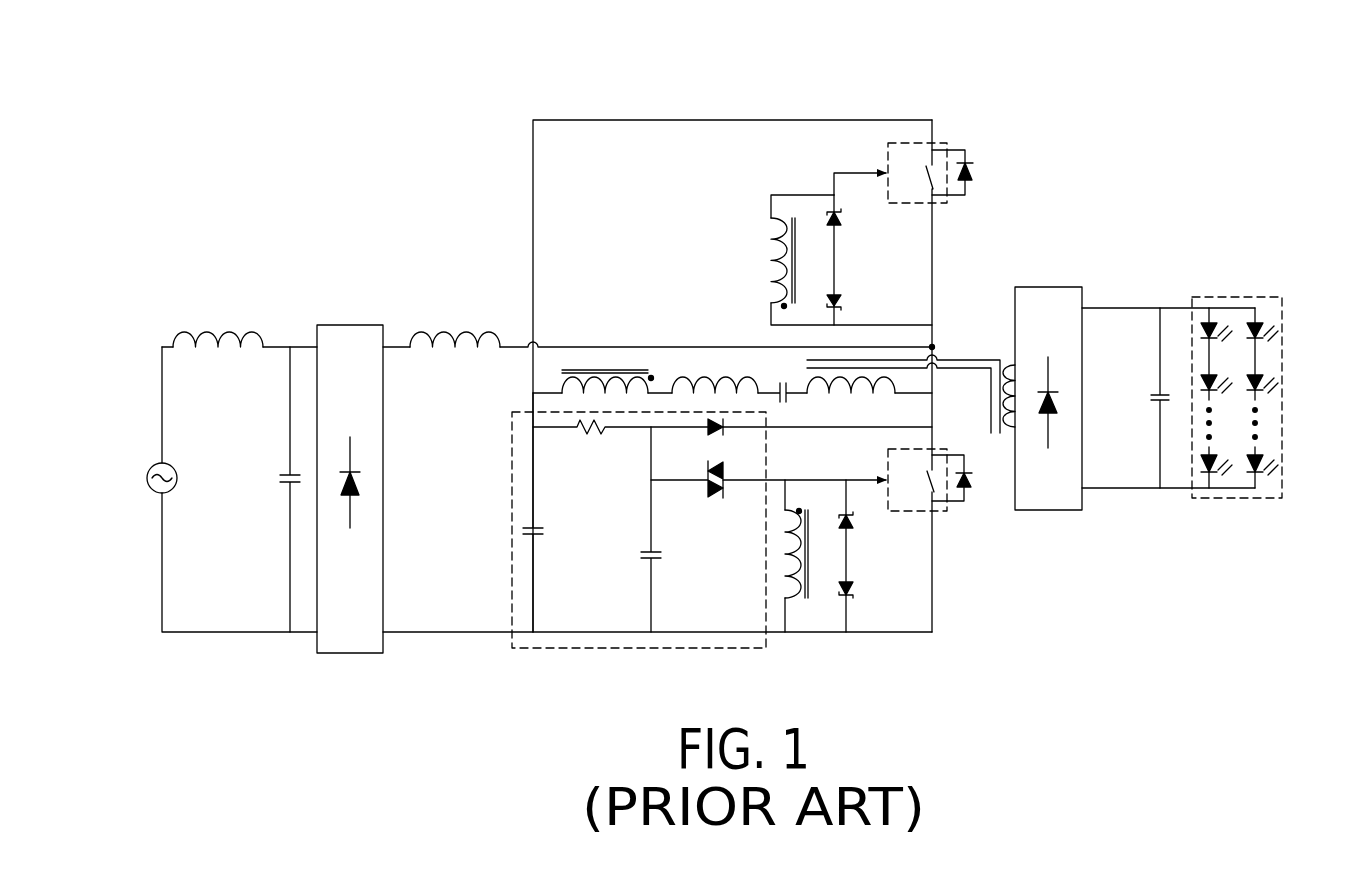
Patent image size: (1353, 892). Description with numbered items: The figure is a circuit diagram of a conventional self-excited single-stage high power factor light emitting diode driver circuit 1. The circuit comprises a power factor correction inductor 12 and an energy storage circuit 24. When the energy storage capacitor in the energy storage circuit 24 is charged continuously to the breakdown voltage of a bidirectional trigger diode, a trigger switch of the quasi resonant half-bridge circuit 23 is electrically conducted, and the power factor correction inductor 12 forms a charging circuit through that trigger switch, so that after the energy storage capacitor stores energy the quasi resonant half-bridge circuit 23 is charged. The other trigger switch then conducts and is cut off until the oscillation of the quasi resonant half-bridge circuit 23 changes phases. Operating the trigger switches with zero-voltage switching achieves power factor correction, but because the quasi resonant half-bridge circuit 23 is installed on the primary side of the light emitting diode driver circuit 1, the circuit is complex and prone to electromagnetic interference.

The light emitting diode driver circuit 1 is at (1326, 75).
The power factor correction inductor 12 is at (412, 330).
The quasi resonant half-bridge circuit 23 is at (678, 368).
The energy storage circuit 24 is at (513, 606).